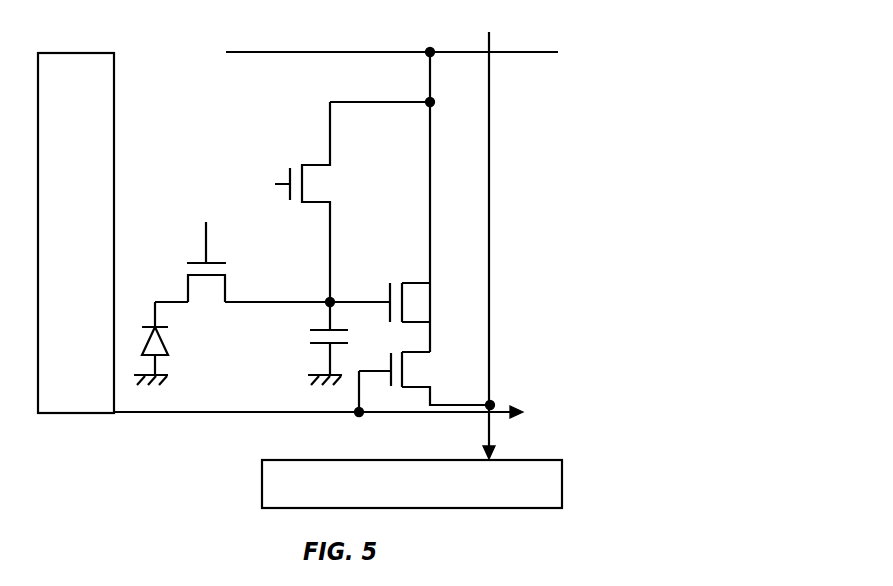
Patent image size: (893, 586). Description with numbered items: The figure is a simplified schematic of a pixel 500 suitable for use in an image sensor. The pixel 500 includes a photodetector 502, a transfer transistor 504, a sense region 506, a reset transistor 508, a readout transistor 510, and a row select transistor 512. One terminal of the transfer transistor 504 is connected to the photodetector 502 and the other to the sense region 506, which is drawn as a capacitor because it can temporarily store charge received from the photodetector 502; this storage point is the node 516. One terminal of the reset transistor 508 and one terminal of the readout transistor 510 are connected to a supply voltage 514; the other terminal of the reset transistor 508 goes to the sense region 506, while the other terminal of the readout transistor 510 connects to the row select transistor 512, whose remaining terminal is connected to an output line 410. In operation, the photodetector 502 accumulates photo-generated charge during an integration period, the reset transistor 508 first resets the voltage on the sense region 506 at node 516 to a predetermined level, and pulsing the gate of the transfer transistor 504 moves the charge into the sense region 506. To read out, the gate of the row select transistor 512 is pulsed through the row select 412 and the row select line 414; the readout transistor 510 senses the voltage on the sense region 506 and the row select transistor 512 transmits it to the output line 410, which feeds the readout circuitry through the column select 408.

The pixel 500 is at (169, 86).
The photodetector 502 is at (161, 341).
The transfer transistor 504 is at (207, 232).
The sense region 506 is at (320, 345).
The reset transistor 508 is at (321, 164).
The readout transistor 510 is at (412, 282).
The row select transistor 512 is at (418, 392).
The supply voltage 514 is at (360, 50).
The node 516 is at (328, 300).
The column select 408 is at (262, 483).
The output line 410 is at (490, 356).
The row select 412 is at (85, 414).
The row select line 414 is at (153, 414).